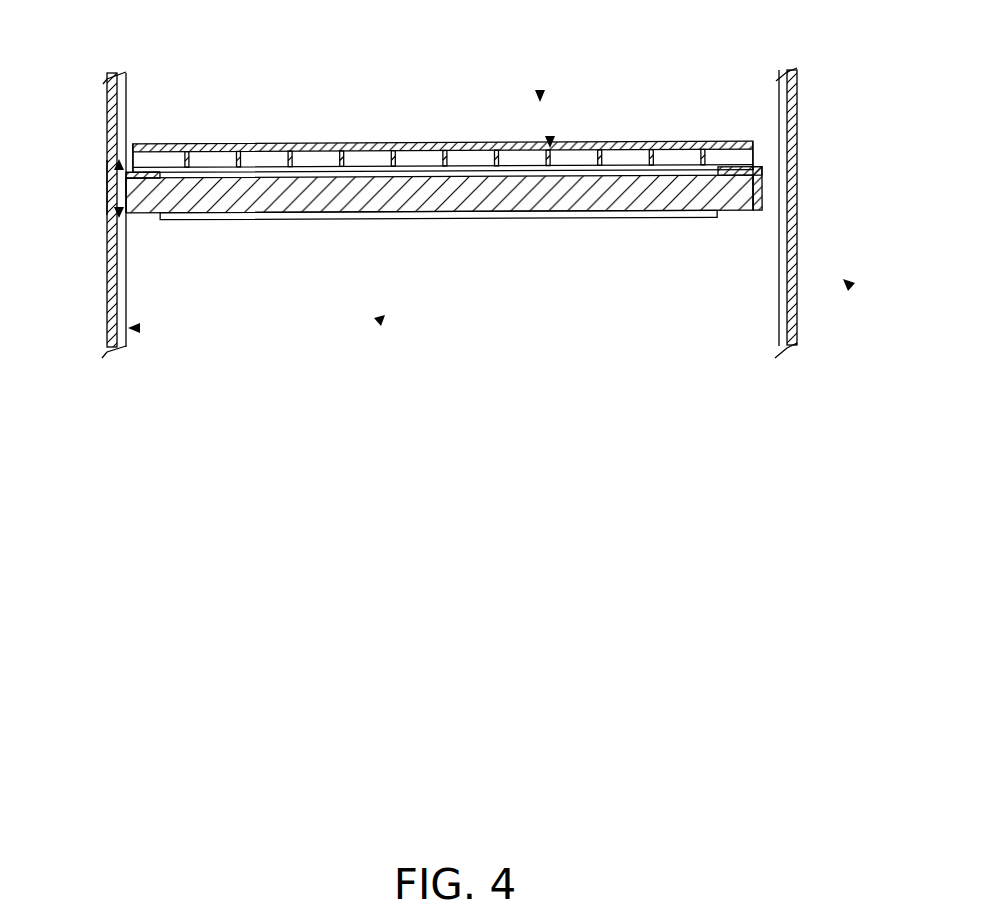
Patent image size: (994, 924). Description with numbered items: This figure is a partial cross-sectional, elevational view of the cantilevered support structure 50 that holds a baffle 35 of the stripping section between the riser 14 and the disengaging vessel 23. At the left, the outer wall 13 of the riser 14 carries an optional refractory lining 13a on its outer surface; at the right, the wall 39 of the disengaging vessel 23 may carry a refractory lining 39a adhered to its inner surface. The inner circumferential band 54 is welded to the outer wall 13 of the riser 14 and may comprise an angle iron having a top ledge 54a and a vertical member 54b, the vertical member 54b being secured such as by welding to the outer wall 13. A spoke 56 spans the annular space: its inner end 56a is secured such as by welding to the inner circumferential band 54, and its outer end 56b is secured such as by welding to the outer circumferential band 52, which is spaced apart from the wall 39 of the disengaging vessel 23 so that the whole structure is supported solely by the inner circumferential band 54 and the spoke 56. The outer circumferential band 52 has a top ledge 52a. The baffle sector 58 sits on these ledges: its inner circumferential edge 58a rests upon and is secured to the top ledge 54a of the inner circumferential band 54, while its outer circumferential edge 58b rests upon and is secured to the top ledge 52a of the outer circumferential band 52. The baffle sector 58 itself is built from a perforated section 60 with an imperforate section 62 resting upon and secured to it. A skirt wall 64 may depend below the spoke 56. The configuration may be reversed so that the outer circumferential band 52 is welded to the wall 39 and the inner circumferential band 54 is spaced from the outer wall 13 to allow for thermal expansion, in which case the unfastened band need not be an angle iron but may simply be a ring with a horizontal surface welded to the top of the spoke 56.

The outer wall 13 is at (107, 265).
The refractory lining 13a is at (123, 254).
The riser 14 is at (139, 328).
The disengaging vessel 23 is at (848, 286).
The baffle 35 is at (540, 92).
The wall 39 is at (790, 112).
The refractory lining 39a is at (784, 313).
The cantilevered support structure 50 is at (381, 321).
The outer circumferential band 52 is at (762, 188).
The top ledge 52a is at (758, 166).
The inner circumferential band 54 is at (110, 193).
The top ledge 54a is at (128, 168).
The vertical member 54b is at (110, 178).
The spoke 56 is at (402, 205).
The inner end 56a is at (148, 204).
The outer end 56b is at (728, 206).
The baffle sector 58 is at (551, 138).
The inner circumferential edge 58a is at (135, 160).
The outer circumferential edge 58b is at (758, 150).
The perforated section 60 is at (450, 165).
The imperforate section 62 is at (393, 145).
The skirt wall 64 is at (531, 220).